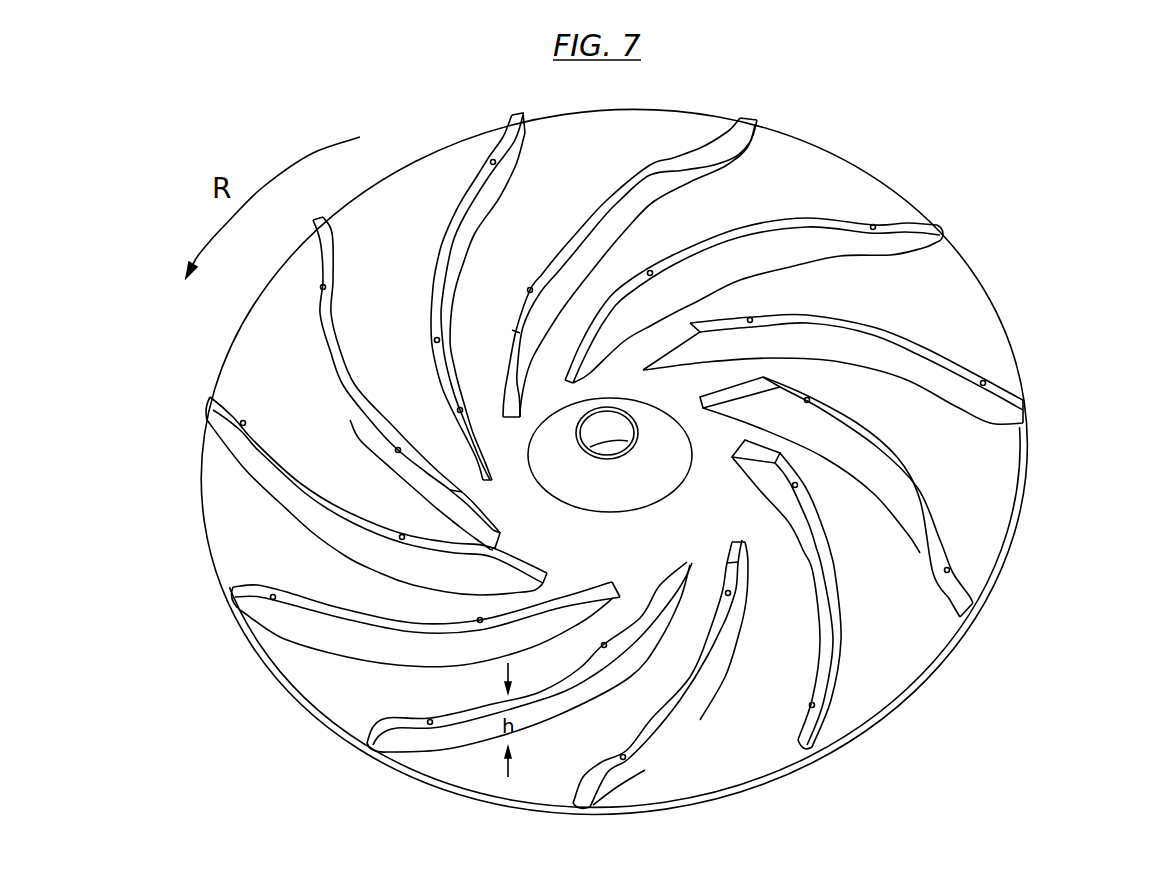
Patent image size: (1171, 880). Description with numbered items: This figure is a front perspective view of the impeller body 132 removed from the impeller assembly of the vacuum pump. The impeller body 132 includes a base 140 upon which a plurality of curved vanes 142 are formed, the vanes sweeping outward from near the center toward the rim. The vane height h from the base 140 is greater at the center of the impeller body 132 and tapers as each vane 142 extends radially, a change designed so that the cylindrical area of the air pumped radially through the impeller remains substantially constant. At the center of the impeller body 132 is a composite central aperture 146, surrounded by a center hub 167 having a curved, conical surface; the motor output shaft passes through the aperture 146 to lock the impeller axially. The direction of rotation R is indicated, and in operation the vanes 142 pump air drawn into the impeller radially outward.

The impeller body 132 is at (977, 275).
The base 140 is at (985, 355).
The curved vanes 142 is at (740, 116).
The composite central aperture 146 is at (620, 431).
The center hub 167 is at (572, 485).